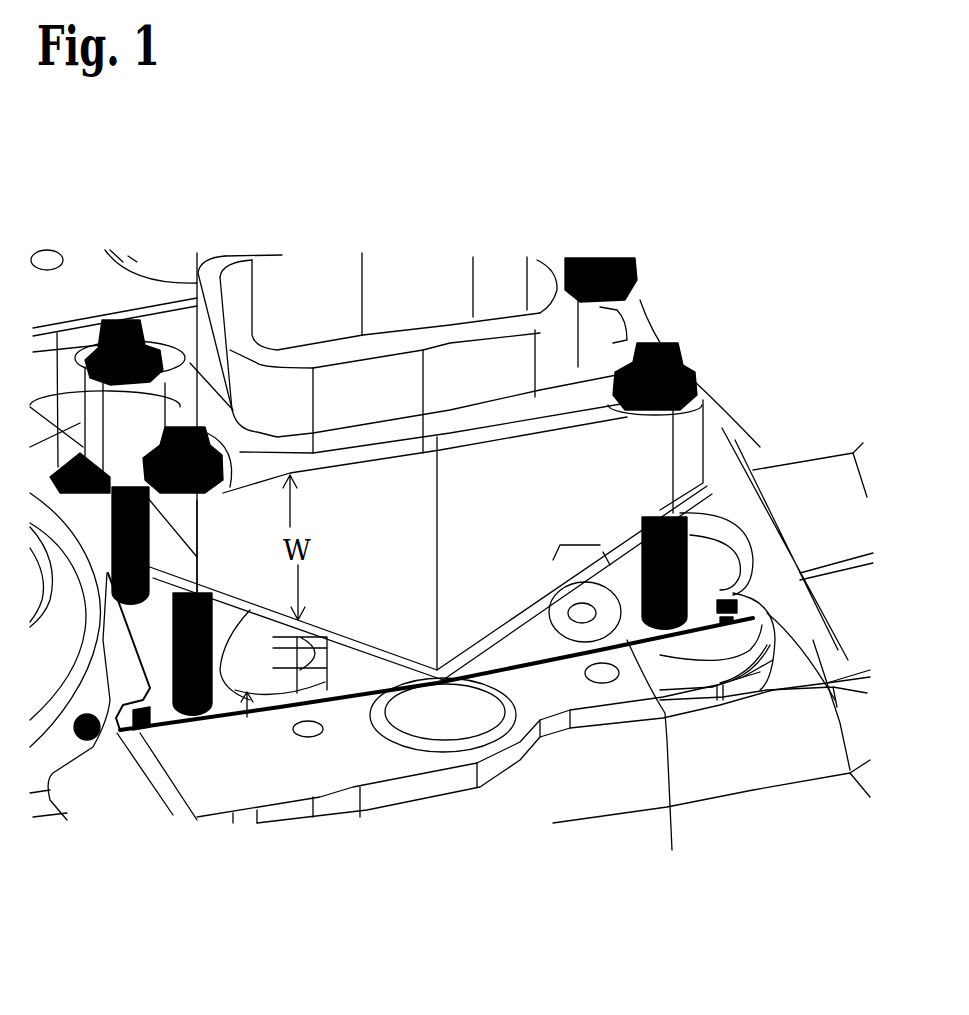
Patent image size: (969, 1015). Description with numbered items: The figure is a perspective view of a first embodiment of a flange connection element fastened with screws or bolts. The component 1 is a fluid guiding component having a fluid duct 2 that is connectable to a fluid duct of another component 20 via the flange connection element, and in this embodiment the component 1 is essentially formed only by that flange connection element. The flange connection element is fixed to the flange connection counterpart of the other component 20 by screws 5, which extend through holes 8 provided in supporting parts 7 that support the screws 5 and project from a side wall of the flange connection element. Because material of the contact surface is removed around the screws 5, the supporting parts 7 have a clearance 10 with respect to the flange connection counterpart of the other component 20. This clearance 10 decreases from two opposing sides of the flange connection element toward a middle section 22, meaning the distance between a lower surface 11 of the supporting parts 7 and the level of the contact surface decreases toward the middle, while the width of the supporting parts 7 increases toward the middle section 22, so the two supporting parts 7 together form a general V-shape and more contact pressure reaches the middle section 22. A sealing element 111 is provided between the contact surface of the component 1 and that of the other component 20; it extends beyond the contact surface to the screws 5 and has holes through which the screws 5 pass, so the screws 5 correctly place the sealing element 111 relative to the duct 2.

The component 1 is at (537, 152).
The fluid duct 2 is at (303, 303).
The screws 5 is at (173, 640).
The supporting parts 7 is at (160, 540).
The holes 8 is at (687, 437).
The clearance 10 is at (713, 667).
The lower surface 11 is at (638, 570).
The another component 20 is at (587, 770).
The middle section 22 is at (452, 603).
The sealing element 111 is at (489, 698).